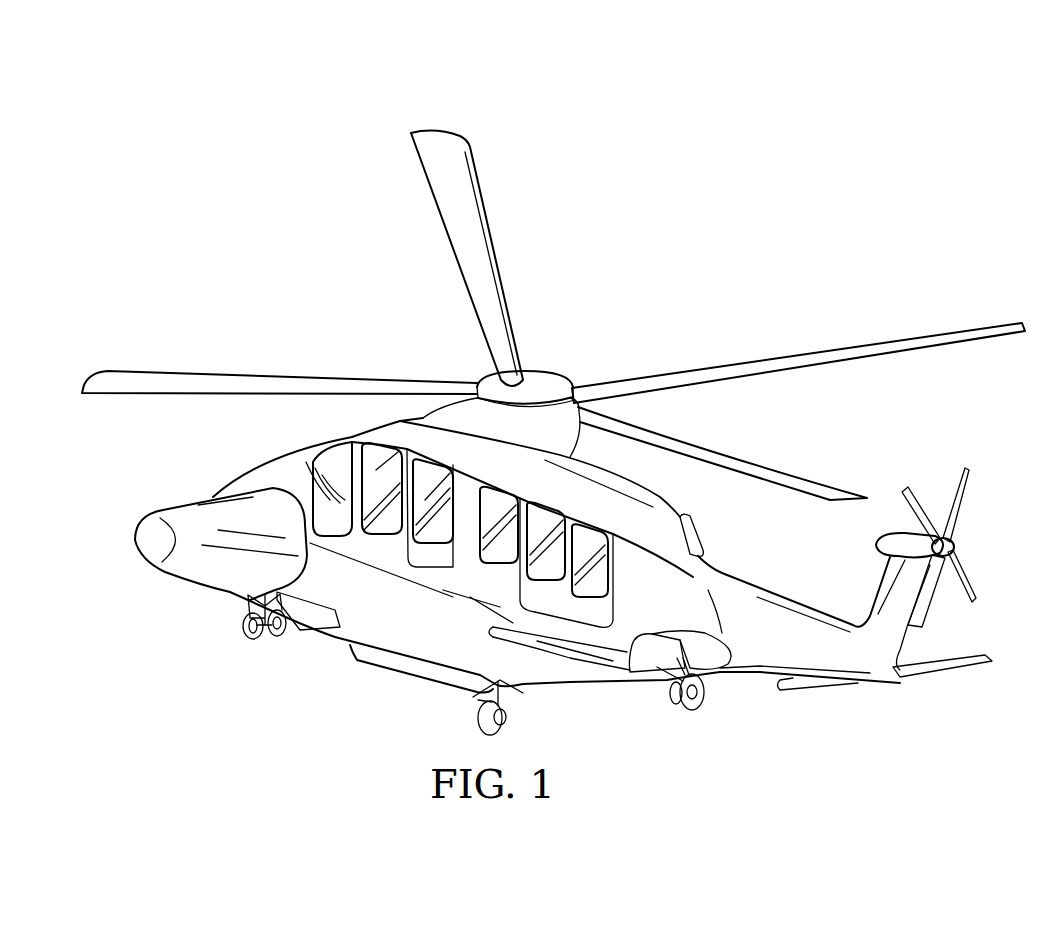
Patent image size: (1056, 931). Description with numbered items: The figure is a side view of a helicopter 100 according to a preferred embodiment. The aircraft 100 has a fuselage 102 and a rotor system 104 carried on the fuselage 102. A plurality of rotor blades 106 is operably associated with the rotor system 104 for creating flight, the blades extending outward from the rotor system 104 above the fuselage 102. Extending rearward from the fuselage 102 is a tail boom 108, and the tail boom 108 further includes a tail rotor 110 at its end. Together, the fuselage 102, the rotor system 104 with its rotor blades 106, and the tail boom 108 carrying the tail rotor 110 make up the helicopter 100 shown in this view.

The helicopter 100 is at (220, 113).
The fuselage 102 is at (352, 637).
The rotor system 104 is at (563, 346).
The rotor blades 106 is at (782, 368).
The tail boom 108 is at (757, 660).
The tail rotor 110 is at (957, 517).